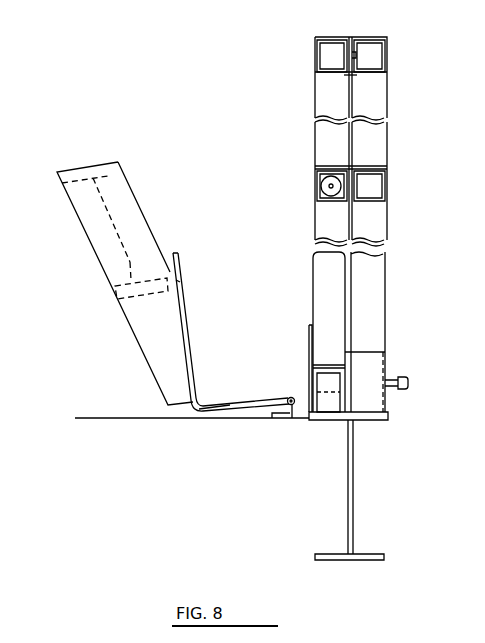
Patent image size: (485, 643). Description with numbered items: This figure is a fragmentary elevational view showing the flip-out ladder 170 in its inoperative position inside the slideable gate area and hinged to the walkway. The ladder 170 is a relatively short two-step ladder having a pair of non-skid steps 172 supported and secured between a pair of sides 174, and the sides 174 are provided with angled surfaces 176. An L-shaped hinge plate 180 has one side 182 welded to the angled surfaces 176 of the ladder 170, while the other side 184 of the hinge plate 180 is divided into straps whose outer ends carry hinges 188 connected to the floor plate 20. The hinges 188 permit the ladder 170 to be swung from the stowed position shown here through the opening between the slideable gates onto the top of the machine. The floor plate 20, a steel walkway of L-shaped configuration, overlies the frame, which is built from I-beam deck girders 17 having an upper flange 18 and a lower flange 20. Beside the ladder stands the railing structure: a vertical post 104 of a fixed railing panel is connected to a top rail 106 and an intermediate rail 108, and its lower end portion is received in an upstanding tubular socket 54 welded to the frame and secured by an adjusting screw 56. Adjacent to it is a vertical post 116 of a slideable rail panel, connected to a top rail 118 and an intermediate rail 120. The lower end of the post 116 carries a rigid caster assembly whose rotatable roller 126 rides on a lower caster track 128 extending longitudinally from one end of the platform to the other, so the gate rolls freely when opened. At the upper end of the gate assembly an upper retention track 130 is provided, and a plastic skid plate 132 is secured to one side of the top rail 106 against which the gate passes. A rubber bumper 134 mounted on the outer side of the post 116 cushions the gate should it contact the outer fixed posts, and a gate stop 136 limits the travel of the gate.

The I-beam deck girder 17 is at (354, 487).
The upper flange 18 is at (368, 420).
The floor plate 20 is at (122, 418).
The tubular socket 54 is at (388, 353).
The adjusting screw 56 is at (401, 382).
The vertical post 104 is at (385, 224).
The top rail 106 is at (371, 76).
The intermediate rail 108 is at (385, 184).
The vertical post 116 is at (322, 289).
The top rail 118 is at (316, 48).
The intermediate rail 120 is at (318, 192).
The roller 126 is at (330, 400).
The lower caster track 128 is at (312, 420).
The upper retention track 130 is at (388, 59).
The plastic skid plate 132 is at (346, 76).
The rubber bumper 134 is at (318, 187).
The gate stop 136 is at (385, 166).
The flip-out ladder 170 is at (151, 166).
The non-skid step 172 is at (115, 237).
The side 174 is at (140, 208).
The angled surface 176 is at (183, 320).
The L-shaped hinge plate 180 is at (278, 420).
The side of hinge plate 182 is at (181, 283).
The other side of hinge plate 184 is at (243, 410).
The hinge 188 is at (290, 397).